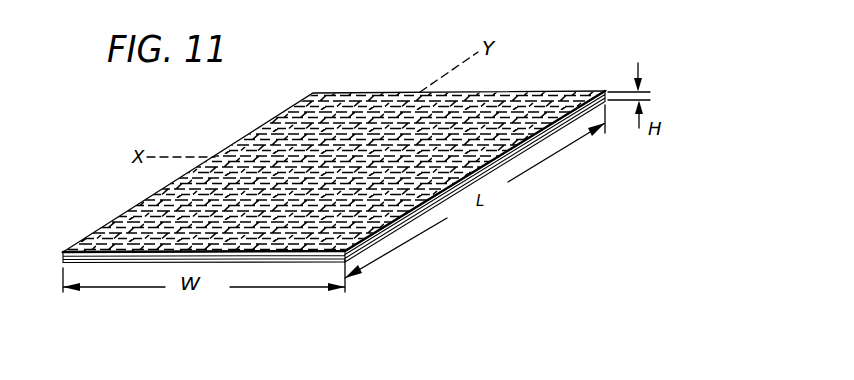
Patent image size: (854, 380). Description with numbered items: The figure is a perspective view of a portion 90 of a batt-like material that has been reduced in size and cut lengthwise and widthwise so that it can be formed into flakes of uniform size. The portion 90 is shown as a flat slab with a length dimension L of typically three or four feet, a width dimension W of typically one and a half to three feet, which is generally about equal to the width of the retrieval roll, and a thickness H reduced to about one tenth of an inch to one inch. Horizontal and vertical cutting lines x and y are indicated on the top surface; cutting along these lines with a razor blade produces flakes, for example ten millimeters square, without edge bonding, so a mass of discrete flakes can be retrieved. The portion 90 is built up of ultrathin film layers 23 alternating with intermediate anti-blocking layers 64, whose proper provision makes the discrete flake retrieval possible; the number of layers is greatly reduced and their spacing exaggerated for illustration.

The portion of batt-like material 90 is at (118, 187).
The anti-blocking layer 64 is at (407, 183).
The ultrathin film layer 23 is at (465, 150).